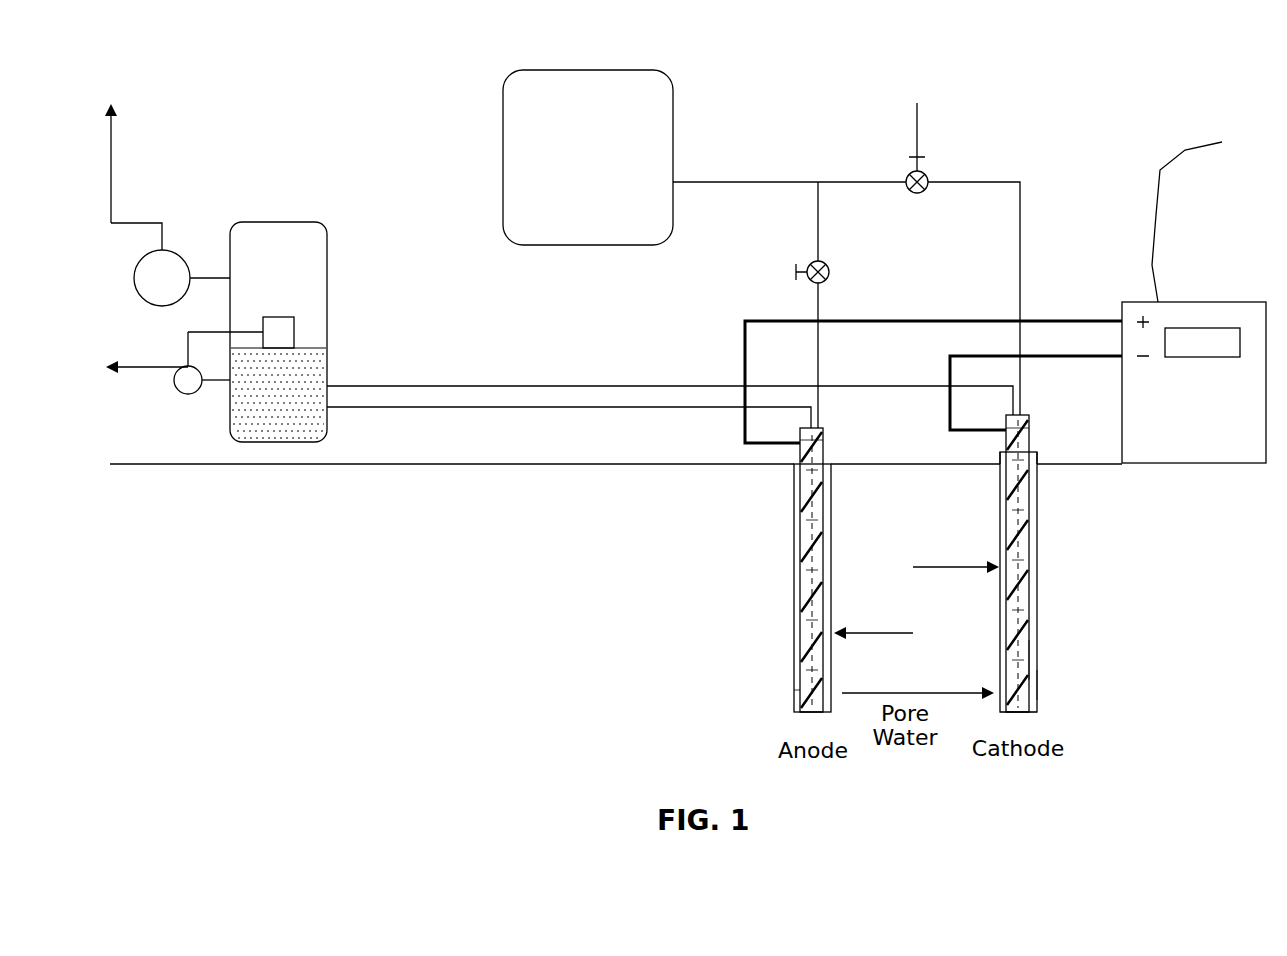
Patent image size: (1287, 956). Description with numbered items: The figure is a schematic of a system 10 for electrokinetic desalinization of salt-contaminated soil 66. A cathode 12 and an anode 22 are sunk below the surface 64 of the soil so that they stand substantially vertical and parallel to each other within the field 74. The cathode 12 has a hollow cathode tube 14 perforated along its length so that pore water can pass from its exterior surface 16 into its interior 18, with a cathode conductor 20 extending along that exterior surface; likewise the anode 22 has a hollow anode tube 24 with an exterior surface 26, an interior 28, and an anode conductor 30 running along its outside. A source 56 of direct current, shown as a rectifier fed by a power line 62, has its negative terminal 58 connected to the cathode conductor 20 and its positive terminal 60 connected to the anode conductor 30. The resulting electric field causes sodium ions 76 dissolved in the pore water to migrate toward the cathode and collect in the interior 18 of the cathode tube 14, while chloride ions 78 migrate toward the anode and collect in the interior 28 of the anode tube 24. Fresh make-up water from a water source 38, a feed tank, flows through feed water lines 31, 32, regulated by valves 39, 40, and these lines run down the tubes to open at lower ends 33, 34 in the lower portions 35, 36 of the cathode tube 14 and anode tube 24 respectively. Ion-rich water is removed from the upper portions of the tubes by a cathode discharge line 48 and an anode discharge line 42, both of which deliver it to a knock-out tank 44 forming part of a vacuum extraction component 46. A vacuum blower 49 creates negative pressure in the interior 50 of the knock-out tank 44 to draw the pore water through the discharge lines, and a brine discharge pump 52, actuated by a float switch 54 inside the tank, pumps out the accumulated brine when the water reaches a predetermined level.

The system for electrokinetic desalinization of soil 10 is at (964, 124).
The cathode 12 is at (1046, 500).
The cathode tube 14 is at (1035, 546).
The exterior surface of cathode tube 16 is at (1037, 692).
The interior of cathode tube 18 is at (1037, 666).
The cathode conductor 20 is at (950, 400).
The anode 22 is at (791, 493).
The anode tube 24 is at (792, 530).
The exterior surface of anode tube 26 is at (797, 560).
The interior of anode tube 28 is at (795, 590).
The anode conductor 30 is at (742, 434).
The feed water line 31 is at (975, 182).
The feed water line 32 is at (818, 228).
The lower end of feed water line 33 is at (1040, 716).
The lower end of feed water line 34 is at (795, 685).
The lower portion of cathode tube 35 is at (1008, 712).
The lower portion of anode tube 36 is at (803, 713).
The source of water 38 is at (673, 130).
The valve 39 is at (917, 103).
The valve 40 is at (830, 272).
The anode discharge line 42 is at (530, 408).
The knock-out tank 44 is at (327, 290).
The vacuum extraction component 46 is at (331, 213).
The cathode discharge line 48 is at (865, 386).
The vacuum blower 49 is at (160, 306).
The interior of knock-out tank 50 is at (243, 235).
The brine discharge pump 52 is at (182, 393).
The float switch 54 is at (294, 330).
The source of direct current electricity 56 is at (1225, 302).
The negative terminal 58 is at (1100, 358).
The positive terminal 60 is at (1100, 319).
The line 62 is at (1158, 215).
The surface of the soil 64 is at (905, 464).
The soil 66 is at (873, 503).
The field 74 is at (1046, 451).
The sodium ions 76 is at (960, 569).
The chloride ions 78 is at (870, 635).